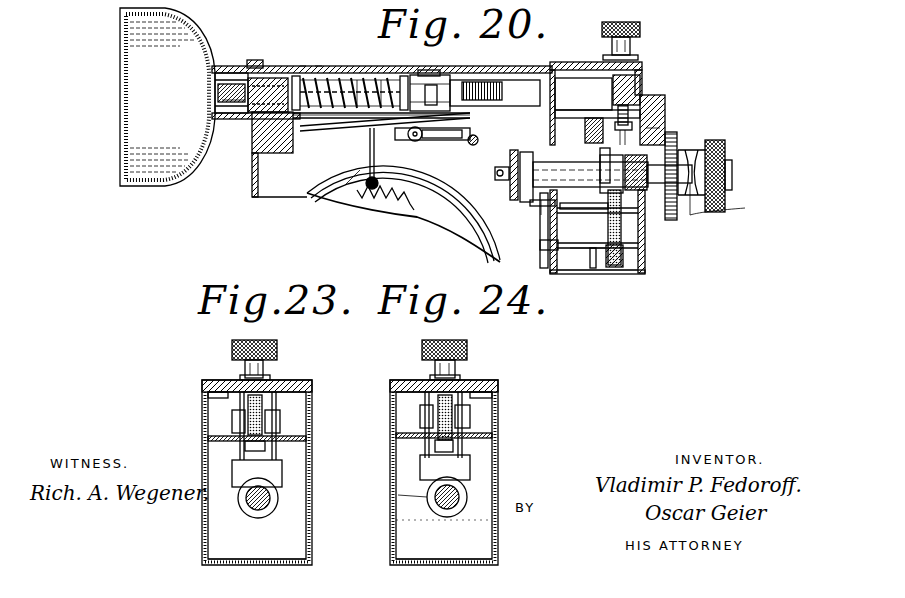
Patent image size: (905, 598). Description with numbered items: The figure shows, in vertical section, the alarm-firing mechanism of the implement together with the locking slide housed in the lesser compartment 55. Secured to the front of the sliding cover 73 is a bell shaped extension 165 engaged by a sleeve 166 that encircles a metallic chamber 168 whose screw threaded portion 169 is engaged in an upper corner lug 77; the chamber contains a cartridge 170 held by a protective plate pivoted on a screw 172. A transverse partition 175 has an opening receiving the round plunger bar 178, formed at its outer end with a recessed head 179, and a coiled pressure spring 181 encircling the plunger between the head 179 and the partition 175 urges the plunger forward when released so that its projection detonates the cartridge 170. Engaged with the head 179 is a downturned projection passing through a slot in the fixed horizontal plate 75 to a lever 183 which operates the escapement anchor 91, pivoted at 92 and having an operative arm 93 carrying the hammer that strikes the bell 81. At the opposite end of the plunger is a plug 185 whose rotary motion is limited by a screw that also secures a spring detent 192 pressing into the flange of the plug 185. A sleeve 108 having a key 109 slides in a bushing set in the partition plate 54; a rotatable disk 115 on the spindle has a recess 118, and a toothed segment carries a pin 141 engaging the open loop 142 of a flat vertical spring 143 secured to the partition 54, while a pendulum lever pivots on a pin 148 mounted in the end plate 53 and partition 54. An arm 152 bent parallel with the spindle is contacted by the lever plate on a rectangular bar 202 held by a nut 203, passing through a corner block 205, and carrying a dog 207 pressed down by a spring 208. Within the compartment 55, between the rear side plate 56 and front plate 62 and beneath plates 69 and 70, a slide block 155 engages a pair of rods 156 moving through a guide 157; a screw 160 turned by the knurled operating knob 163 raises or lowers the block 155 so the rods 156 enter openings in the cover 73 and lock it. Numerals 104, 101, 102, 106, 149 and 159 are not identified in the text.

In FIG. 20, the bell shaped extension 165 is at (230, 15).
In FIG. 20, the sleeve 166 is at (226, 72).
In FIG. 20, the metallic chamber 168 is at (227, 100).
In FIG. 20, the screw threaded portion 169 is at (264, 80).
In FIG. 20, the screw 172 is at (318, 66).
In FIG. 20, the plunger bar 178 is at (305, 74).
In FIG. 20, the recessed head 179 is at (303, 66).
In FIG. 20, the fixed horizontal plate 75 is at (340, 76).
In FIG. 24, the fixed horizontal plate 75 is at (492, 440).
In FIG. 20, the coiled pressure spring 181 is at (357, 76).
In FIG. 20, the cartridge 170 is at (381, 76).
In FIG. 20, the transverse partition 175 is at (430, 70).
In FIG. 20, the spring detent 192 is at (470, 82).
In FIG. 20, the sliding cover 73 is at (492, 66).
In FIG. 23, the sliding cover 73 is at (312, 388).
In FIG. 24, the sliding cover 73 is at (498, 388).
In FIG. 20, the spring 208 is at (498, 128).
In FIG. 20, the sleeve 108 is at (590, 145).
In FIG. 20, the plug 185 is at (650, 95).
In FIG. 20, the slide plate 104 is at (645, 140).
In FIG. 20, the arm 152 is at (668, 140).
In FIG. 20, the knurled knob 101 is at (725, 150).
In FIG. 20, the knob shaft 102 is at (735, 203).
In FIG. 20, the lever 183 is at (310, 170).
In FIG. 20, the interior lugs 77 is at (254, 165).
In FIG. 20, the corner block 205 is at (395, 135).
In FIG. 20, the rectangular bar 202 is at (430, 140).
In FIG. 20, the nut 203 is at (468, 142).
In FIG. 20, the dog 207 is at (510, 158).
In FIG. 20, the recess 118 is at (535, 206).
In FIG. 20, the rotatable disk 115 is at (541, 215).
In FIG. 20, the open loop 142 is at (540, 245).
In FIG. 20, the flat vertical spring 143 is at (541, 260).
In FIG. 20, the end plate 53 is at (645, 268).
In FIG. 20, the key 109 is at (621, 230).
In FIG. 20, the gear 106 is at (620, 250).
In FIG. 20, the shelf 149 is at (575, 209).
In FIG. 20, the pin 141 is at (594, 268).
In FIG. 20, the pin 148 is at (585, 250).
In FIG. 20, the partition plate 54 is at (565, 272).
In FIG. 20, the bell 81 is at (315, 197).
In FIG. 20, the pivot 92 is at (348, 205).
In FIG. 20, the escapement anchor 91 is at (404, 196).
In FIG. 20, the operative arm 93 is at (361, 158).
In FIG. 23, the front plate 62 is at (312, 538).
In FIG. 24, the front plate 62 is at (498, 538).
In FIG. 23, the knurled operating knob 163 is at (277, 350).
In FIG. 24, the knurled operating knob 163 is at (467, 348).
In FIG. 23, the plate 69 is at (295, 382).
In FIG. 24, the plate 69 is at (480, 380).
In FIG. 23, the plate 70 is at (208, 397).
In FIG. 24, the plate 70 is at (470, 400).
In FIG. 23, the rods 156 is at (240, 410).
In FIG. 24, the rods 156 is at (433, 408).
In FIG. 23, the screw 160 is at (255, 425).
In FIG. 24, the screw 160 is at (468, 422).
In FIG. 23, the guide 157 is at (282, 420).
In FIG. 23, the slide block 155 is at (262, 473).
In FIG. 24, the slide block 155 is at (445, 467).
In FIG. 23, the roller 159 is at (270, 495).
In FIG. 24, the roller 159 is at (432, 497).
In FIG. 23, the rear side plate 56 is at (236, 540).
In FIG. 24, the rear side plate 56 is at (422, 555).
In FIG. 24, the compartment 55 is at (470, 520).